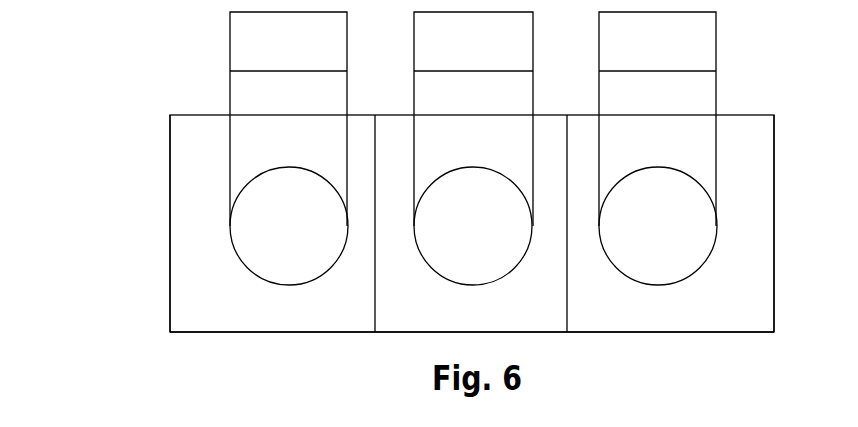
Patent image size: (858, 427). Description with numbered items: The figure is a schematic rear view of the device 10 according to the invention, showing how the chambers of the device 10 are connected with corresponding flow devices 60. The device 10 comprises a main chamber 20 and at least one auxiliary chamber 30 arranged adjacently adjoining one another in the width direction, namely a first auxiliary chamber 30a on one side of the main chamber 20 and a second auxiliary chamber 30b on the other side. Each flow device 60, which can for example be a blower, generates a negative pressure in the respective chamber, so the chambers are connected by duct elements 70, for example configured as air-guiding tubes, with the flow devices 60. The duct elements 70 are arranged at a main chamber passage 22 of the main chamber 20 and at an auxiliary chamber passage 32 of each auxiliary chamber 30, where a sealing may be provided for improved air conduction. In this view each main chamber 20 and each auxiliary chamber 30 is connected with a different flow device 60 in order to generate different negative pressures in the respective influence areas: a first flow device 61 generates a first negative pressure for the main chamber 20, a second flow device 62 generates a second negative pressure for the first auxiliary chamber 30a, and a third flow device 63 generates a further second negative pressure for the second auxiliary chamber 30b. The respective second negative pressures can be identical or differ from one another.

The device 10 is at (200, 115).
The main chamber 20 is at (532, 301).
The main chamber passage 22 is at (490, 241).
The auxiliary chamber 30 is at (439, 223).
The first auxiliary chamber 30a is at (202, 248).
The second auxiliary chamber 30b is at (722, 277).
The auxiliary chamber passage 32 is at (308, 241).
The flow device 60 is at (473, 119).
The first flow device 61 is at (518, 58).
The second flow device 62 is at (336, 58).
The third flow device 63 is at (702, 58).
The duct element 70 is at (533, 98).